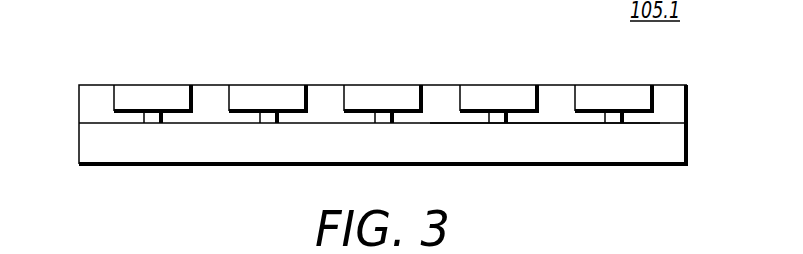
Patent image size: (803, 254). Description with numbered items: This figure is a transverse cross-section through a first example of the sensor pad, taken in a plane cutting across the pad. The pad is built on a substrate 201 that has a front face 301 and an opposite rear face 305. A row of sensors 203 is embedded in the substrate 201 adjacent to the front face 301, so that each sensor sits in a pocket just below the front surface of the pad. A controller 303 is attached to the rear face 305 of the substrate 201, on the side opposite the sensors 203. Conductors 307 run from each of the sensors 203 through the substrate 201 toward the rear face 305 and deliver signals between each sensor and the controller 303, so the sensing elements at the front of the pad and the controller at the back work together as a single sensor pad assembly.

The substrate 201 is at (88, 101).
The sensors 203 is at (498, 92).
The front face 301 is at (671, 84).
The controller 303 is at (652, 148).
The rear face 305 is at (548, 124).
The conductors 307 is at (162, 116).